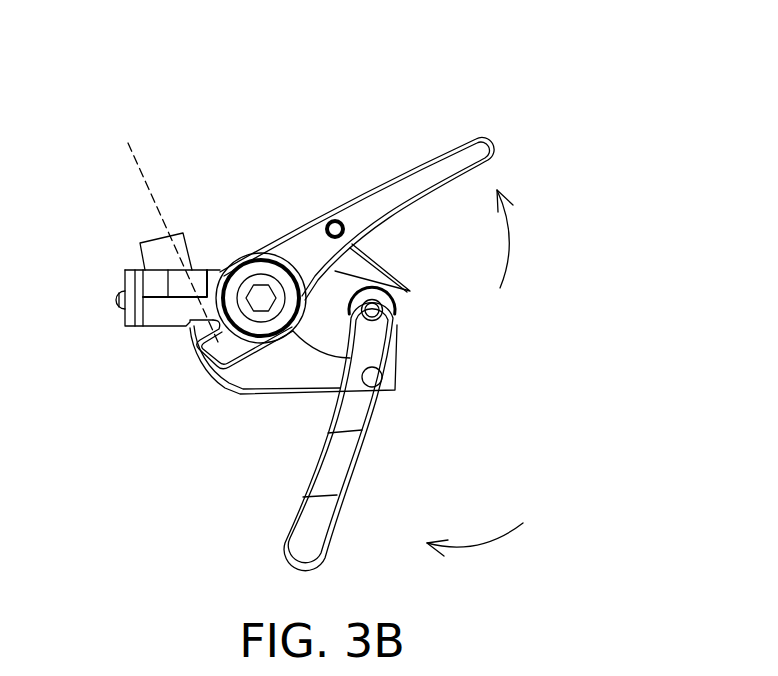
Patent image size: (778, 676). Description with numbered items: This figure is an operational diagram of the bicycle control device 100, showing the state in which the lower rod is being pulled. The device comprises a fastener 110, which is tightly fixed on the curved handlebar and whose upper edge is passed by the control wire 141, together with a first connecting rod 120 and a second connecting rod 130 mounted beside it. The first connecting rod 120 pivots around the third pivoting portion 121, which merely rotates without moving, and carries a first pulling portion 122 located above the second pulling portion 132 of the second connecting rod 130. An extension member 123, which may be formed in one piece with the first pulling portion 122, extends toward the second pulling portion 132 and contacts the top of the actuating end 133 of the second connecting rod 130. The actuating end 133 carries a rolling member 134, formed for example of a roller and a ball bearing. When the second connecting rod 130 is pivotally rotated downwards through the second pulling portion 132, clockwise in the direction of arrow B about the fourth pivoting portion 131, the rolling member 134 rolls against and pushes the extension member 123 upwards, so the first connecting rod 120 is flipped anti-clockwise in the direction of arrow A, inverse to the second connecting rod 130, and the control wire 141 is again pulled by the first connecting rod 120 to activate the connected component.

The bicycle control device 100 is at (630, 49).
The fastener 110 is at (130, 270).
The first connecting rod 120 is at (308, 135).
The third pivoting portion 121 is at (262, 295).
The first pulling portion 122 is at (435, 163).
The extension member 123 is at (388, 267).
The second connecting rod 130 is at (248, 502).
The fourth pivoting portion 131 is at (373, 377).
The second pulling portion 132 is at (313, 525).
The actuating end 133 is at (392, 322).
The rolling member 134 is at (382, 310).
The control wire 141 is at (137, 184).